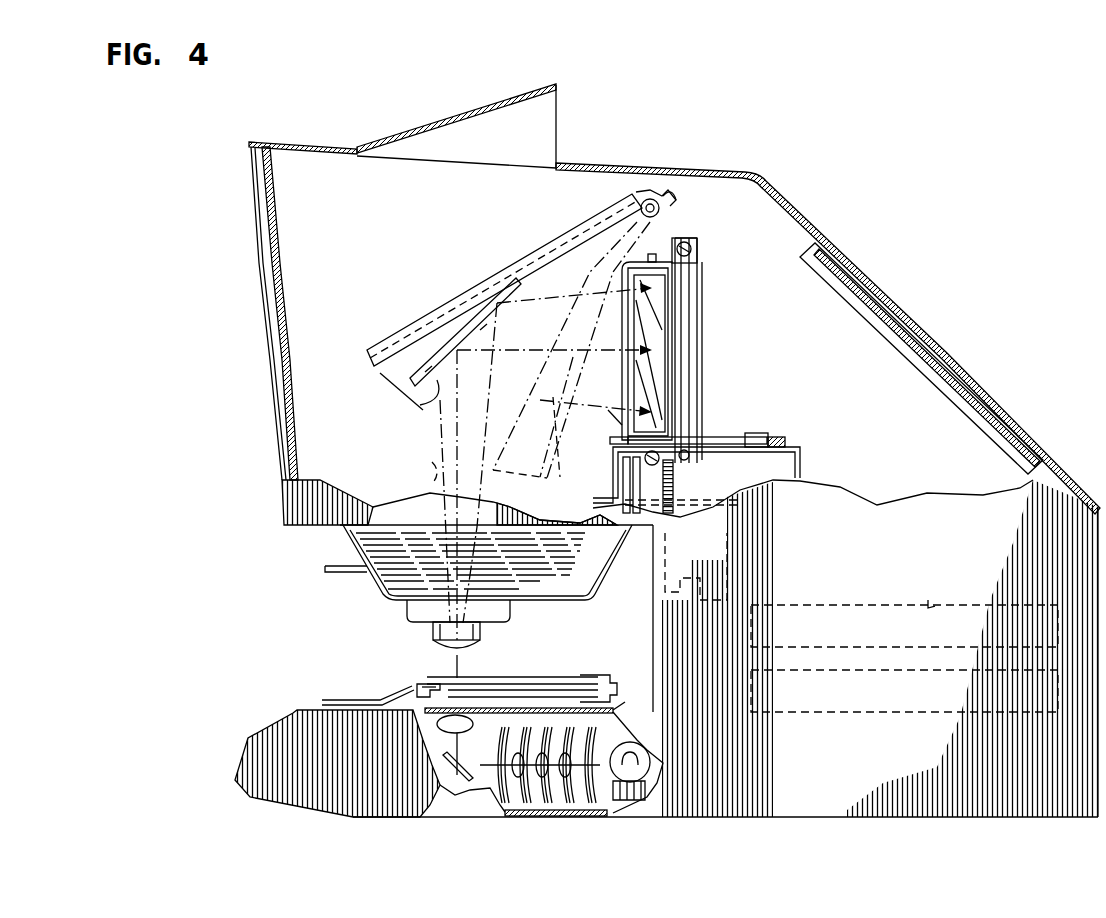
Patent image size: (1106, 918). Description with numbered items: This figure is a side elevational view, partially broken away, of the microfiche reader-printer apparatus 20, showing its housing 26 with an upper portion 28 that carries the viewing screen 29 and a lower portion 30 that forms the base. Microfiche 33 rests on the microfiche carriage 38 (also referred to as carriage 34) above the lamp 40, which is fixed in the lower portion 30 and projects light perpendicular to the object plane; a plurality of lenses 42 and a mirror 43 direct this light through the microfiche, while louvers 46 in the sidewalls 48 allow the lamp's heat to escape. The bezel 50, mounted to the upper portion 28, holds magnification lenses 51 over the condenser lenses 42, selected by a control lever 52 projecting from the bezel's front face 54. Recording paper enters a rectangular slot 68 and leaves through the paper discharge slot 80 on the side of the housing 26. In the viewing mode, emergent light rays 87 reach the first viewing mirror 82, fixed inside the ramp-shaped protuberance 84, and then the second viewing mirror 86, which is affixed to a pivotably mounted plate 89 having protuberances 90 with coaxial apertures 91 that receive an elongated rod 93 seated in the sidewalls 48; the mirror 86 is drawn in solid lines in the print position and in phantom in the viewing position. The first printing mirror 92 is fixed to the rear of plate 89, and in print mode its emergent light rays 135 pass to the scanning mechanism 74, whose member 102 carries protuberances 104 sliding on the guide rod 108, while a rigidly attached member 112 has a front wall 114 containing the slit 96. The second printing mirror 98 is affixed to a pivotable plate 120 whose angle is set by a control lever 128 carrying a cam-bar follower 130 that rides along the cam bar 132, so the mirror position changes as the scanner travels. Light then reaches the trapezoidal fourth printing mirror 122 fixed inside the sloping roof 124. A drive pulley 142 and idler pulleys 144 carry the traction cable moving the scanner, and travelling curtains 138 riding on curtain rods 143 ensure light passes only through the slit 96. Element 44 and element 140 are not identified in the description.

The microfiche reader-printer apparatus 20 is at (1004, 220).
The housing 26 is at (801, 817).
The upper portion of the housing 28 is at (312, 263).
The viewing screen 29 is at (279, 365).
The lower portion of the housing 30 is at (307, 809).
The microfiche 33 is at (455, 672).
The microfiche carriage 34 is at (541, 692).
The microfiche carriage 38 is at (501, 680).
The lamp 40 is at (630, 800).
The lenses 42 is at (418, 700).
The mirror 43 is at (445, 765).
The document tray 44 is at (336, 689).
The louvers 46 is at (530, 800).
The sidewalls 48 is at (385, 224).
The bezel 50 is at (378, 588).
The magnification lenses 51 is at (433, 630).
The control lever 52 is at (330, 571).
The front face of the bezel 54 is at (347, 550).
The rectangular slot 68 is at (900, 680).
The scanning mechanism 74 is at (757, 344).
The paper discharge slot 80 is at (929, 598).
The first viewing mirror 82 is at (559, 120).
The ramp-shaped protuberance 84 is at (448, 128).
The second viewing mirror 86 is at (486, 282).
The emergent light rays 87 is at (436, 470).
The pivotably mounted plate 89 is at (454, 305).
The protuberances 90 is at (661, 210).
The apertures 91 is at (644, 204).
The first printing mirror 92 is at (428, 403).
The elongated rod 93 is at (648, 200).
The slit 96 is at (622, 304).
The second printing mirror 98 is at (632, 368).
The member 102 is at (613, 490).
The protuberances 104 is at (676, 486).
The guide rod 108 is at (622, 436).
The member 112 is at (667, 255).
The front wall 114 is at (622, 423).
The pivotably mounted plate 120 is at (692, 373).
The fourth printing mirror 122 is at (906, 345).
The sloping roof 124 is at (978, 388).
The control lever 128 is at (715, 437).
The cam-bar follower 130 is at (768, 434).
The cam bar 132 is at (790, 440).
The emergent light rays 135 is at (546, 431).
The travelling curtain 138 is at (699, 300).
The sensor array 140 is at (701, 336).
The drive pulley 142 is at (632, 528).
The curtain rods 143 is at (695, 252).
The idler pulleys 144 is at (622, 464).